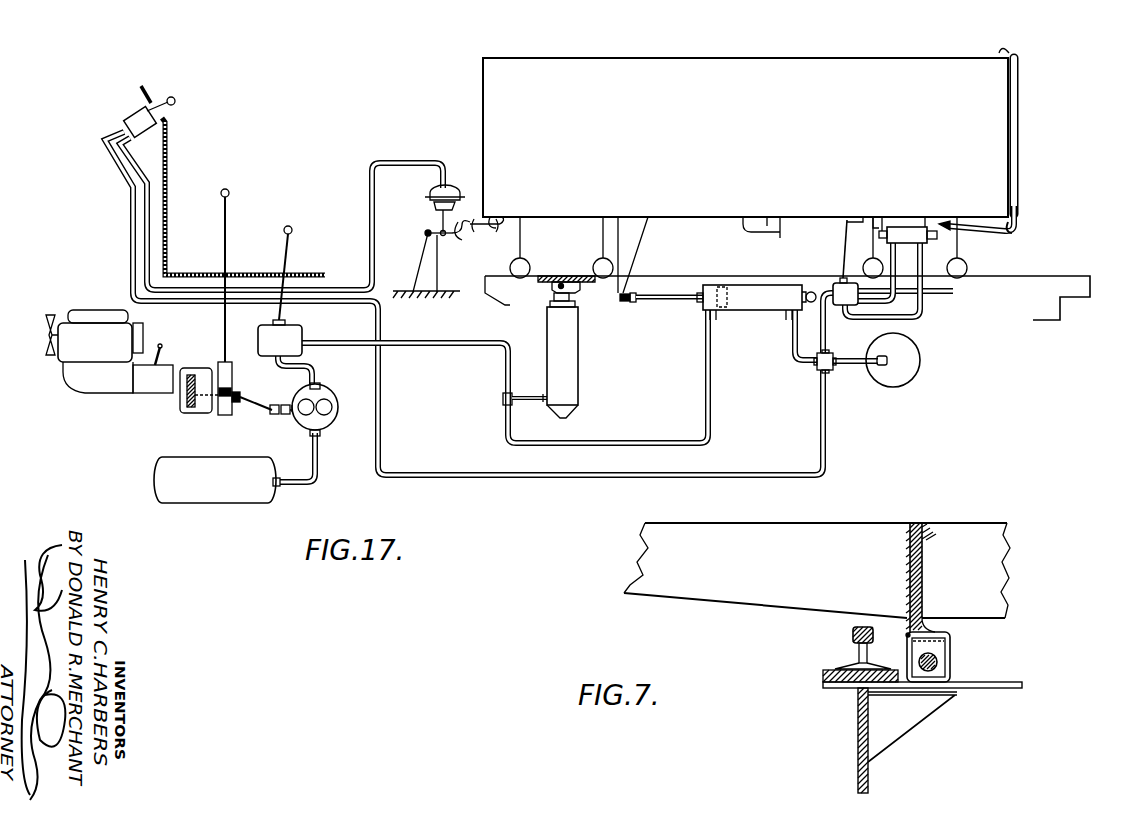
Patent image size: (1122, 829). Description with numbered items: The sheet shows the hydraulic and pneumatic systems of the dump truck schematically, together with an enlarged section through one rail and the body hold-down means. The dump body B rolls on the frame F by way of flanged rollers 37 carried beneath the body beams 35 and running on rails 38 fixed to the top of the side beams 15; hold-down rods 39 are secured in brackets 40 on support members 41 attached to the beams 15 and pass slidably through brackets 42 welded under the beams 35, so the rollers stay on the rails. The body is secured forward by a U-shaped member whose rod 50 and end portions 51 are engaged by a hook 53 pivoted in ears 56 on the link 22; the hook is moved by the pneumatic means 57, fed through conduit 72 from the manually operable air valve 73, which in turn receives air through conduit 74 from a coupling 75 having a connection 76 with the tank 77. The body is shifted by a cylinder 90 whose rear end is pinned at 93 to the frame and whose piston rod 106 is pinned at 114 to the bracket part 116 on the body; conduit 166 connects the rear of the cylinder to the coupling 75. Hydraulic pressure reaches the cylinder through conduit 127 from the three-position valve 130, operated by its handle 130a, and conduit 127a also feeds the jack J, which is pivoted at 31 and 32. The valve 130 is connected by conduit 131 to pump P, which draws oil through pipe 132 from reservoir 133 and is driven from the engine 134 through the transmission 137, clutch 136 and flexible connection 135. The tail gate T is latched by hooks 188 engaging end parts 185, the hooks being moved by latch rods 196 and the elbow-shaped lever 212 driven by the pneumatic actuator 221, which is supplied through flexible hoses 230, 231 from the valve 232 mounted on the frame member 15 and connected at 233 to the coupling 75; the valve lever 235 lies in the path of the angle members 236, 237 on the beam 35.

In FIG. 17, the air valve 73 is at (168, 141).
In FIG. 17, the conduit 72 is at (153, 222).
In FIG. 17, the conduit 74 is at (133, 240).
In FIG. 17, the three-position valve 130 is at (258, 341).
In FIG. 17, the handle 130a is at (288, 250).
In FIG. 17, the engine 134 is at (73, 353).
In FIG. 17, the transmission 137 is at (178, 407).
In FIG. 17, the clutch 136 is at (220, 412).
In FIG. 17, the flexible connection 135 is at (268, 408).
In FIG. 17, the conduit 131 is at (320, 372).
In FIG. 17, the pipe 132 is at (318, 465).
In FIG. 17, the reservoir 133 is at (207, 497).
In FIG. 17, the conduit 127 is at (410, 345).
In FIG. 17, the conduit 127a is at (530, 395).
In FIG. 17, the pneumatic means 57 is at (458, 183).
In FIG. 17, the supporting ears 56 is at (423, 253).
In FIG. 17, the transverse rod 50 is at (459, 239).
In FIG. 17, the hook 53 is at (474, 237).
In FIG. 17, the end portions 51 is at (508, 217).
In FIG. 17, the links 22 is at (417, 297).
In FIG. 17, the side beams 15 is at (492, 292).
In FIG. 7, the side beams 15 is at (860, 718).
In FIG. 17, the flanged roller 37 is at (526, 260).
In FIG. 17, the pivotal connection 32 is at (562, 282).
In FIG. 17, the part 116 is at (632, 266).
In FIG. 17, the pivot pin 114 is at (623, 302).
In FIG. 17, the piston rod 106 is at (677, 301).
In FIG. 17, the brackets 40 is at (723, 287).
In FIG. 7, the brackets 40 is at (949, 640).
In FIG. 17, the cylinder 90 is at (742, 311).
In FIG. 17, the pivot pin 93 is at (825, 285).
In FIG. 17, the angle member 236 is at (744, 222).
In FIG. 17, the angle member 237 is at (853, 232).
In FIG. 17, the valve actuating lever 235 is at (843, 252).
In FIG. 17, the pneumatic actuator 221 is at (907, 230).
In FIG. 17, the latch rods 196 is at (976, 229).
In FIG. 17, the elbow-shaped lever 212 is at (958, 238).
In FIG. 17, the end parts 185 is at (1016, 222).
In FIG. 17, the latch hook 188 is at (1002, 234).
In FIG. 17, the rails 38 is at (1052, 277).
In FIG. 7, the rails 38 is at (852, 633).
In FIG. 17, the valve 232 is at (923, 291).
In FIG. 17, the flexible conduit 230 is at (921, 304).
In FIG. 17, the flexible conduit 231 is at (927, 318).
In FIG. 17, the connection 233 is at (822, 330).
In FIG. 17, the conduit 166 is at (792, 352).
In FIG. 17, the coupling 75 is at (818, 371).
In FIG. 17, the connection 76 is at (853, 367).
In FIG. 17, the tank 77 is at (913, 368).
In FIG. 17, the pivot 31 is at (563, 419).
In FIG. 7, the beams 35 is at (918, 572).
In FIG. 7, the rods 39 is at (935, 658).
In FIG. 7, the brackets 42 is at (938, 672).
In FIG. 7, the support members 41 is at (916, 696).
In FIG. 17, the dump body B is at (791, 58).
In FIG. 7, the dump body B is at (861, 520).
In FIG. 17, the tail gate T is at (1024, 97).
In FIG. 17, the frame F is at (493, 302).
In FIG. 7, the frame F is at (848, 754).
In FIG. 17, the hydraulic jack J is at (582, 362).
In FIG. 17, the pump P is at (319, 411).